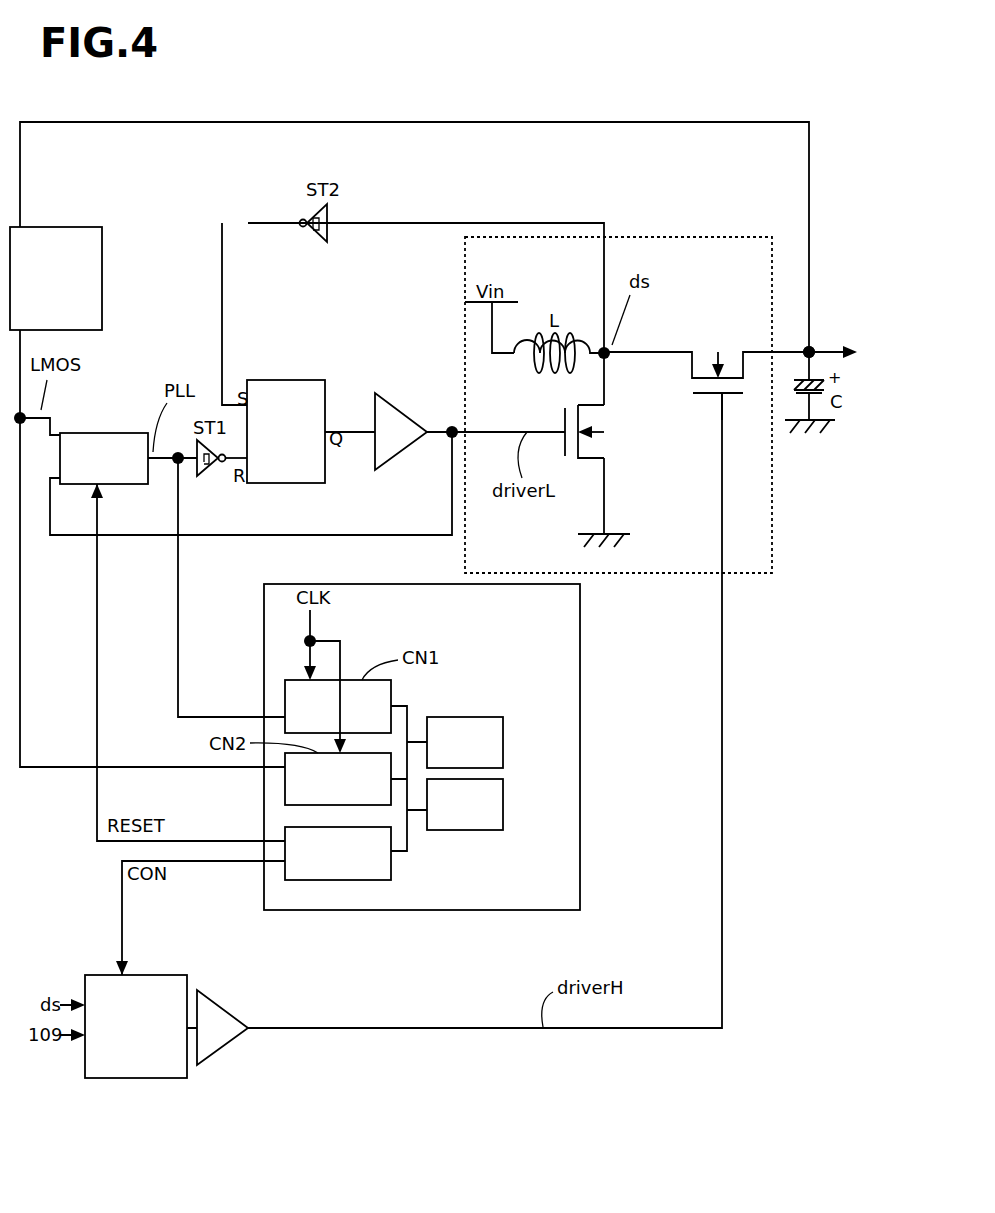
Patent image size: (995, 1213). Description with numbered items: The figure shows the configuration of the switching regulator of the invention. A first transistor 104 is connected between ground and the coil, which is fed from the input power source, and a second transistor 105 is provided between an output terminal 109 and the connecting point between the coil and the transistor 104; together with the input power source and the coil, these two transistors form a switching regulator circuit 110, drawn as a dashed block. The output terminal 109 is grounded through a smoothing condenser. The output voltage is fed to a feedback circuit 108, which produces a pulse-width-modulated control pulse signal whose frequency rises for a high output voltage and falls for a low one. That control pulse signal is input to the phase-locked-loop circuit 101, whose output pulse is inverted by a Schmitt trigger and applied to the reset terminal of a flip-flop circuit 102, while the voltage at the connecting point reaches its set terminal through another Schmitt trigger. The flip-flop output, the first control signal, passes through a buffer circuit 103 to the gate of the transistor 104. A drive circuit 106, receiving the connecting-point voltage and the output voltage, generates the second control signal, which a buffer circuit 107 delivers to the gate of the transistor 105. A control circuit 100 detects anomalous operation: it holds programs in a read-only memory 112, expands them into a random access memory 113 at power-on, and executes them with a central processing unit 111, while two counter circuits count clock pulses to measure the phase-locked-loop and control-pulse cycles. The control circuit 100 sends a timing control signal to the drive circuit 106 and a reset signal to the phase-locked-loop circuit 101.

The control circuit 100 is at (422, 732).
The PLL circuit 101 is at (92, 433).
The flip-flop circuit 102 is at (272, 380).
The buffer circuit 103 is at (392, 393).
The transistor 104 is at (620, 440).
The transistor 105 is at (706, 340).
The drive circuit 106 is at (100, 975).
The buffer circuit 107 is at (220, 1005).
The feedback circuit 108 is at (45, 227).
The output terminal 109 is at (812, 335).
The switching regulator circuit 110 is at (640, 240).
The CPU 111 is at (382, 880).
The ROM 112 is at (503, 740).
The RAM 113 is at (503, 802).